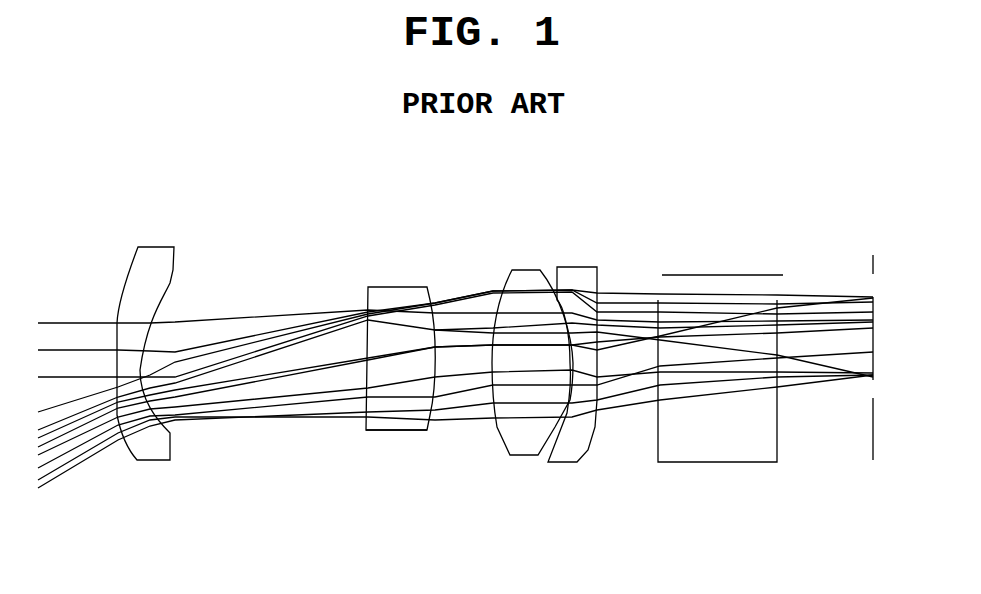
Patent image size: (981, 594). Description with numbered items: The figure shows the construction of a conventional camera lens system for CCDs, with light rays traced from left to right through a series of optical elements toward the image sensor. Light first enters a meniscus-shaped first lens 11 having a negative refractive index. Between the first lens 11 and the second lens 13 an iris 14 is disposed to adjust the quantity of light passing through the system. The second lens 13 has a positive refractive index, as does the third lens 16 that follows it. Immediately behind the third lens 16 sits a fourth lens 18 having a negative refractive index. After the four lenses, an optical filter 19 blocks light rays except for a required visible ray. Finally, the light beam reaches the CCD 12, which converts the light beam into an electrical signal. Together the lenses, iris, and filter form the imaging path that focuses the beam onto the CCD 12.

The first lens 11 is at (155, 245).
The CCD 12 is at (868, 442).
The second lens 13 is at (396, 286).
The iris 14 is at (355, 422).
The third lens 16 is at (528, 270).
The fourth lens 18 is at (576, 278).
The optical filter 19 is at (721, 280).